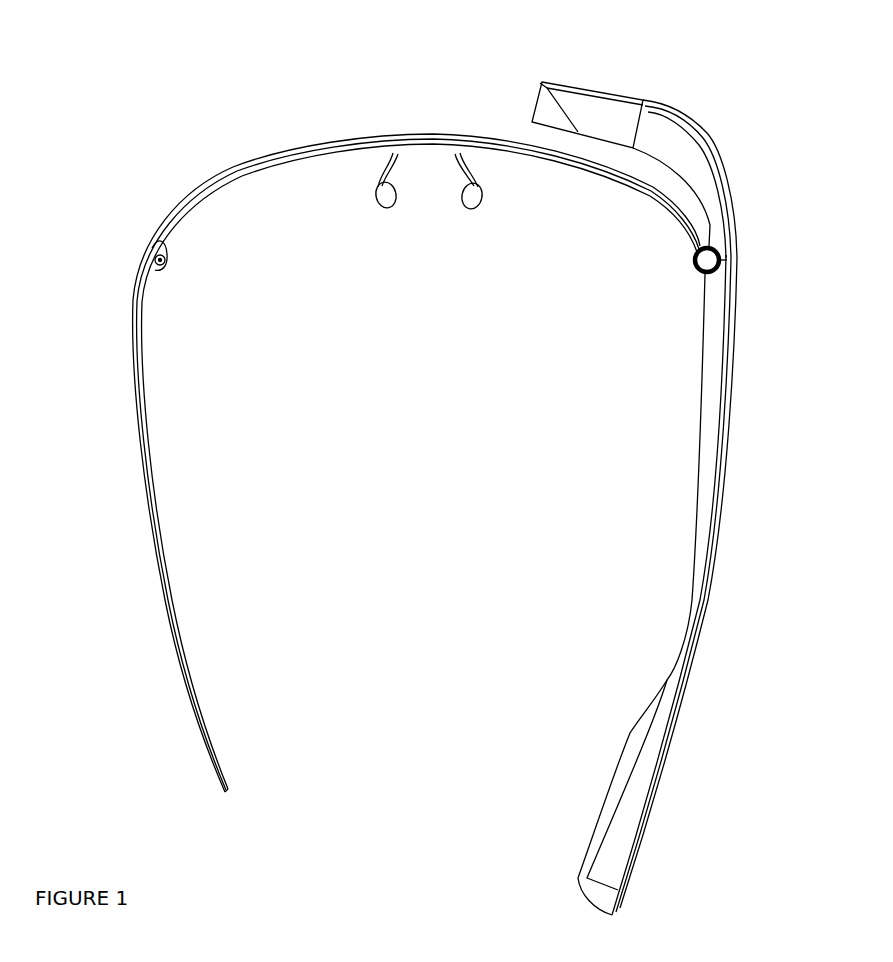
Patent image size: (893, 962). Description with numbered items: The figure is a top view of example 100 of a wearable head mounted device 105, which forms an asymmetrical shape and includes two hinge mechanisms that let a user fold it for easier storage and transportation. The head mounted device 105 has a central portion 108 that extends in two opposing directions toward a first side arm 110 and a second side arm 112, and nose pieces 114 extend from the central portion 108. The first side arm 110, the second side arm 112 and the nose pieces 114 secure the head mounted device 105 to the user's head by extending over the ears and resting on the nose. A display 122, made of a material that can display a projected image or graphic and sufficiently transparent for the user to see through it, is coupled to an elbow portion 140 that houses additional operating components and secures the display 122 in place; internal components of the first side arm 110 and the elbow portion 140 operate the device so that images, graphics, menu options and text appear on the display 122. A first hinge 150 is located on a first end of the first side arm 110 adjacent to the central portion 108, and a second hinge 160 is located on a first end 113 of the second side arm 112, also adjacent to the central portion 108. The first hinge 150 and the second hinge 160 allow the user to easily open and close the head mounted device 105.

The example 100 is at (447, 481).
The head mounted device 105 is at (356, 205).
The central portion 108 is at (443, 176).
The first side arm 110 is at (730, 466).
The second side arm 112 is at (162, 590).
The first end of the second side arm 113 is at (132, 340).
The nose pieces 114 is at (378, 198).
The display 122 is at (535, 108).
The elbow portion 140 is at (718, 142).
The first hinge 150 is at (765, 248).
The second hinge 160 is at (138, 240).